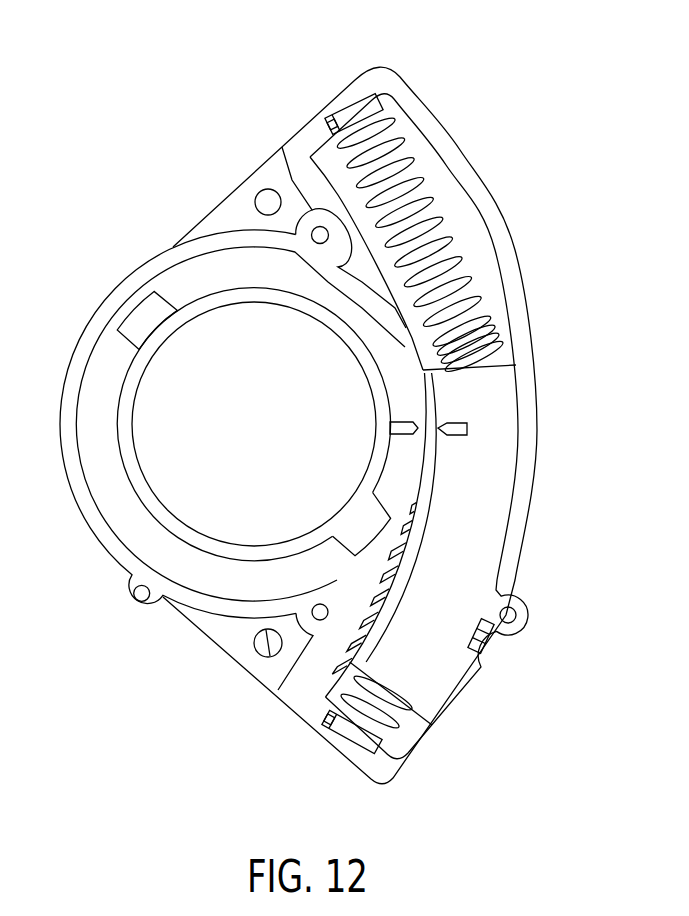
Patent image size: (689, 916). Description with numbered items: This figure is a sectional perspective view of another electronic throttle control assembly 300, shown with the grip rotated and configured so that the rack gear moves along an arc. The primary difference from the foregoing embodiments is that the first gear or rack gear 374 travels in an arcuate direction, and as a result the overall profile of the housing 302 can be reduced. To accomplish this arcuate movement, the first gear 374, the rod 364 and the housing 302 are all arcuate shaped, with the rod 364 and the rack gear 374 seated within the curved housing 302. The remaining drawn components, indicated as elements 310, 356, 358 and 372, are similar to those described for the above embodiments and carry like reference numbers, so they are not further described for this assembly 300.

The electronic throttle control assembly 300 is at (116, 89).
The housing 302 is at (382, 77).
The inner ring 310 is at (140, 323).
The outer ring 356 is at (110, 507).
The tabs 358 is at (155, 305).
The rod 364 is at (470, 272).
The spring seat 372 is at (462, 210).
The rack gear 374 is at (497, 490).